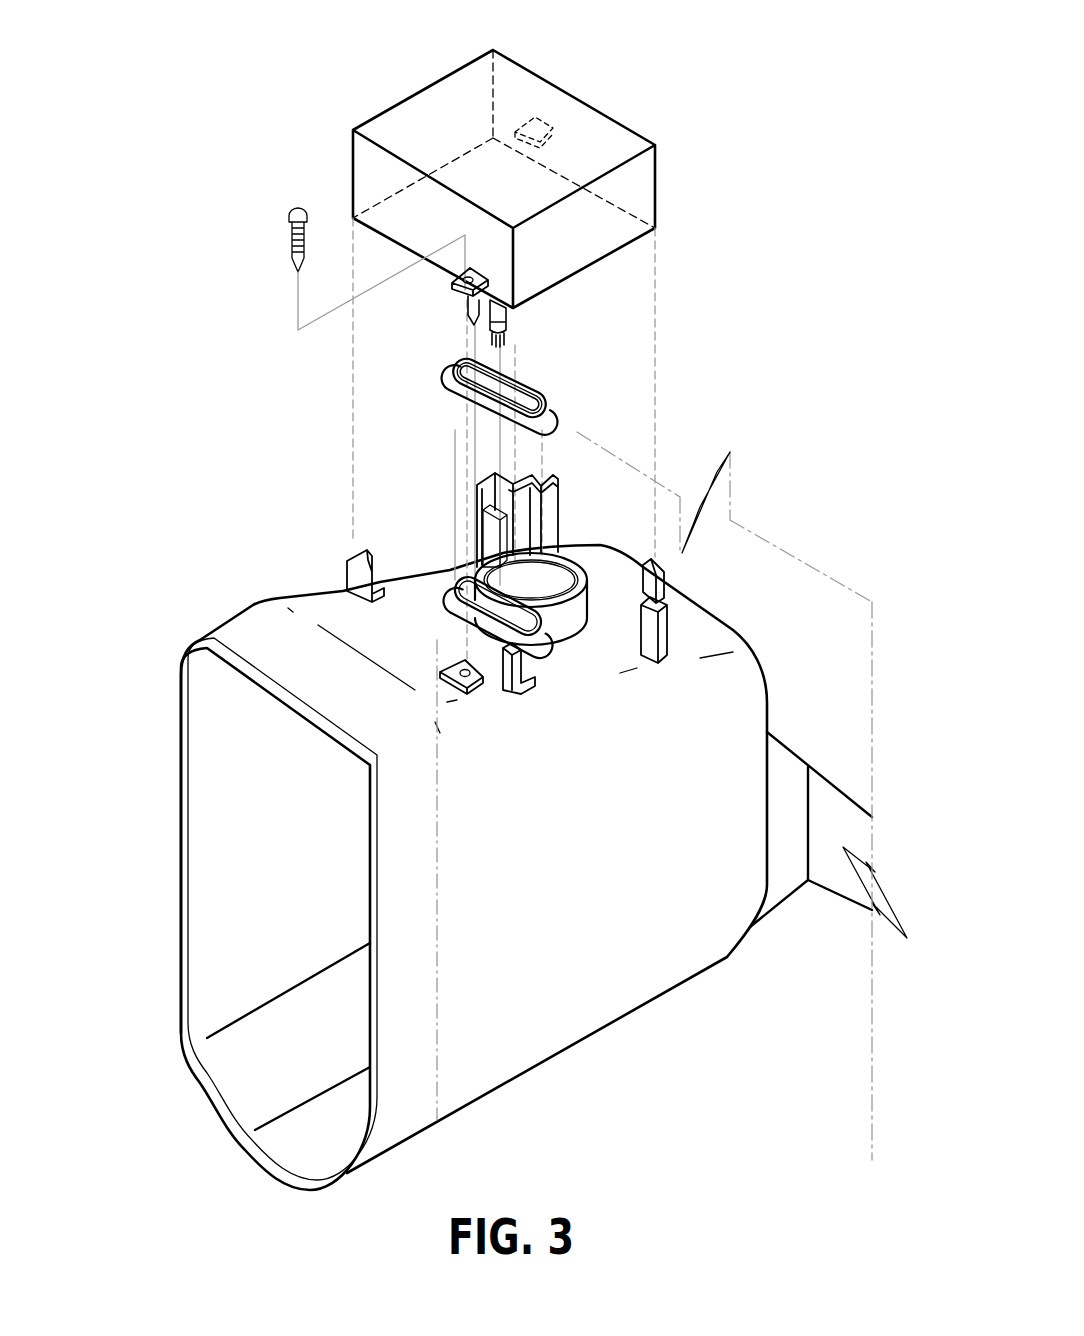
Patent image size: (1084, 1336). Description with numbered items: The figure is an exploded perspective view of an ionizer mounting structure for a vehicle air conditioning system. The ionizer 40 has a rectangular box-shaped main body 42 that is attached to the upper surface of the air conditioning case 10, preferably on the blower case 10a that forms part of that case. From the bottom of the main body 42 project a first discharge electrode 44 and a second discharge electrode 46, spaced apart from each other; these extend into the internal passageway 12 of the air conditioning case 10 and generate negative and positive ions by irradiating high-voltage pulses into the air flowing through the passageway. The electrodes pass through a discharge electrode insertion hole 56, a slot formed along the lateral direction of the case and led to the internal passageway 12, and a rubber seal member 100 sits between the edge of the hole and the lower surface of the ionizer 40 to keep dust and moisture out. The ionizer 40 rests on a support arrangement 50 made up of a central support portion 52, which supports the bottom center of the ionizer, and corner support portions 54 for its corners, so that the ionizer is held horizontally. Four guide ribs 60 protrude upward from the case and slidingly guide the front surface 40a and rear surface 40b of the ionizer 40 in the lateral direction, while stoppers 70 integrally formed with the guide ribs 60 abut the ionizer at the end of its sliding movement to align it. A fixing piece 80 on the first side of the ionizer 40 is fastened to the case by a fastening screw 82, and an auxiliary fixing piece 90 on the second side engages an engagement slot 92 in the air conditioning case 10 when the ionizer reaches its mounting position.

The air conditioning case 10 is at (573, 1073).
The blower case 10a is at (710, 623).
The internal passageway 12 is at (273, 933).
The ionizer 40 is at (665, 92).
The front surface 40a is at (370, 165).
The rear surface 40b is at (655, 188).
The main body 42 is at (510, 73).
The first discharge electrode 44 is at (468, 305).
The second discharge electrode 46 is at (505, 320).
The support arrangement 50 is at (540, 660).
The central support portion 52 is at (587, 612).
The corner support portion 54 is at (380, 583).
The discharge electrode insertion hole 56 is at (452, 585).
The guide rib 60 is at (510, 470).
The stopper 70 is at (480, 478).
The fixing piece 80 is at (467, 290).
The fastening screw 82 is at (287, 233).
The auxiliary fixing piece 90 is at (544, 120).
The engagement slot 92 is at (557, 513).
The seal member 100 is at (537, 390).